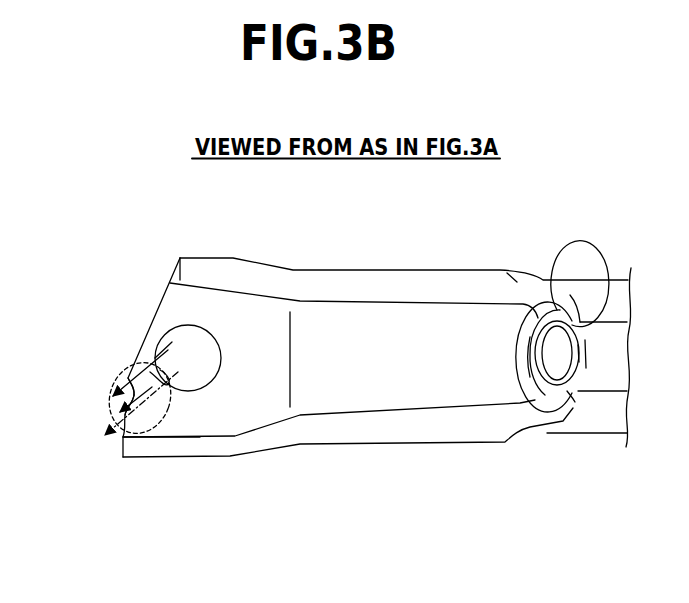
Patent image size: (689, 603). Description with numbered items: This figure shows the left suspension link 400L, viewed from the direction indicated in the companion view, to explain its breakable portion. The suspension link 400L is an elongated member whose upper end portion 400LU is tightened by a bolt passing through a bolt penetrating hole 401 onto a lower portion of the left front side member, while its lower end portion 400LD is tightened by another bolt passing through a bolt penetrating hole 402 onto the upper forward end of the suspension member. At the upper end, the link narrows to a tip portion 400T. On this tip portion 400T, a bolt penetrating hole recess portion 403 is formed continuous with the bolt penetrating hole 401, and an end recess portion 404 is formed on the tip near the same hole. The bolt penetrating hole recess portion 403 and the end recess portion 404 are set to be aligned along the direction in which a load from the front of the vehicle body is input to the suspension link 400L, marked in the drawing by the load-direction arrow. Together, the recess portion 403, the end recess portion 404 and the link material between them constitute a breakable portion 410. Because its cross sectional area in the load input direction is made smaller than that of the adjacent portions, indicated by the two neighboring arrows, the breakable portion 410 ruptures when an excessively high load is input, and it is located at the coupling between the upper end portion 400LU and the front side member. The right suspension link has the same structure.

The left suspension link 400L is at (380, 440).
The upper end portion 400LU is at (203, 440).
The lower end portion 400LD is at (543, 287).
The tip portion 400T is at (153, 310).
The bolt penetrating hole 401 is at (207, 331).
The bolt penetrating hole 402 is at (558, 368).
The bolt penetrating hole recess portion 403 is at (150, 380).
The end recess portion 404 is at (118, 406).
The breakable portion 410 is at (103, 433).